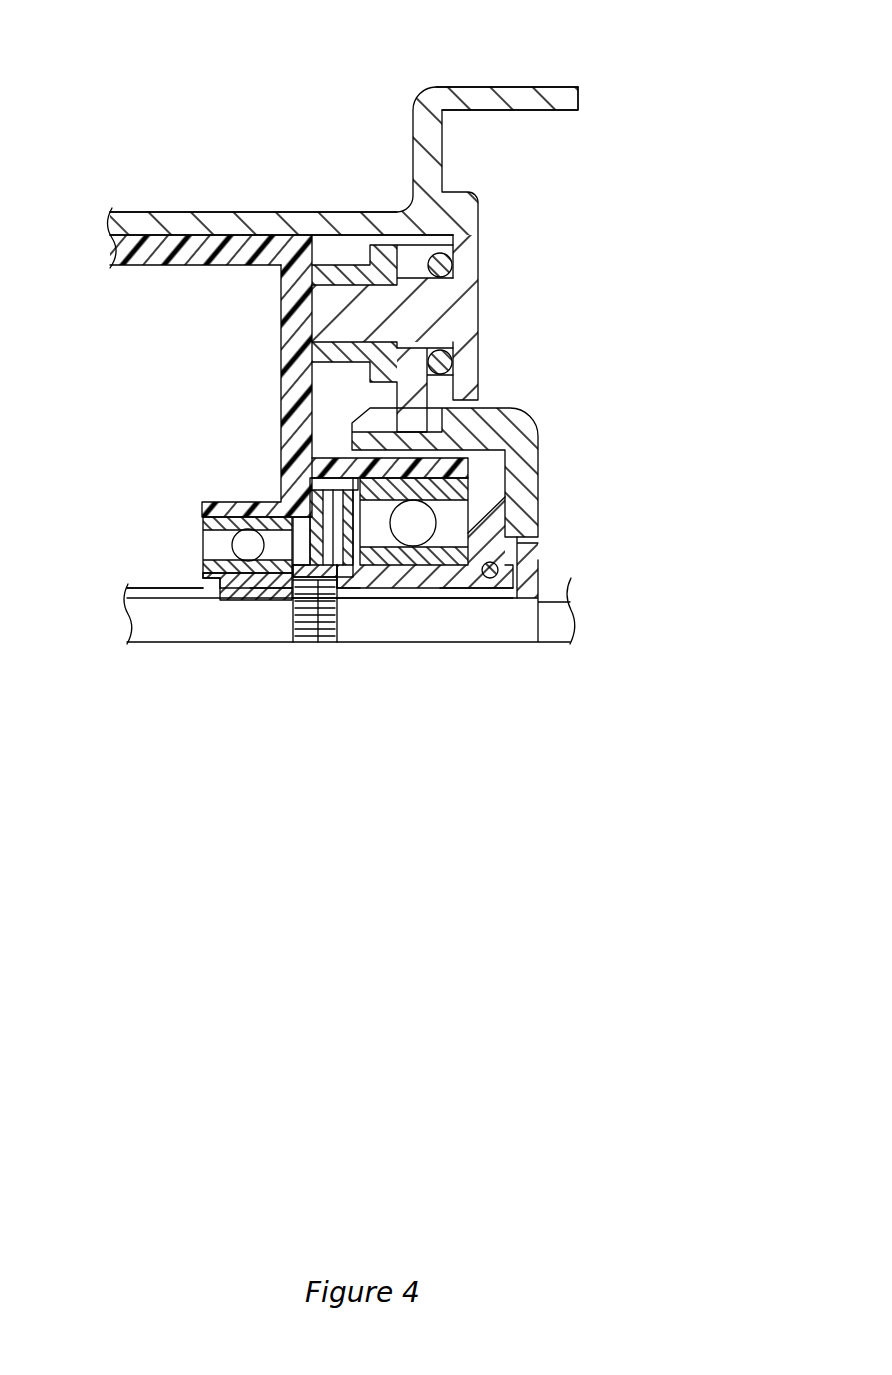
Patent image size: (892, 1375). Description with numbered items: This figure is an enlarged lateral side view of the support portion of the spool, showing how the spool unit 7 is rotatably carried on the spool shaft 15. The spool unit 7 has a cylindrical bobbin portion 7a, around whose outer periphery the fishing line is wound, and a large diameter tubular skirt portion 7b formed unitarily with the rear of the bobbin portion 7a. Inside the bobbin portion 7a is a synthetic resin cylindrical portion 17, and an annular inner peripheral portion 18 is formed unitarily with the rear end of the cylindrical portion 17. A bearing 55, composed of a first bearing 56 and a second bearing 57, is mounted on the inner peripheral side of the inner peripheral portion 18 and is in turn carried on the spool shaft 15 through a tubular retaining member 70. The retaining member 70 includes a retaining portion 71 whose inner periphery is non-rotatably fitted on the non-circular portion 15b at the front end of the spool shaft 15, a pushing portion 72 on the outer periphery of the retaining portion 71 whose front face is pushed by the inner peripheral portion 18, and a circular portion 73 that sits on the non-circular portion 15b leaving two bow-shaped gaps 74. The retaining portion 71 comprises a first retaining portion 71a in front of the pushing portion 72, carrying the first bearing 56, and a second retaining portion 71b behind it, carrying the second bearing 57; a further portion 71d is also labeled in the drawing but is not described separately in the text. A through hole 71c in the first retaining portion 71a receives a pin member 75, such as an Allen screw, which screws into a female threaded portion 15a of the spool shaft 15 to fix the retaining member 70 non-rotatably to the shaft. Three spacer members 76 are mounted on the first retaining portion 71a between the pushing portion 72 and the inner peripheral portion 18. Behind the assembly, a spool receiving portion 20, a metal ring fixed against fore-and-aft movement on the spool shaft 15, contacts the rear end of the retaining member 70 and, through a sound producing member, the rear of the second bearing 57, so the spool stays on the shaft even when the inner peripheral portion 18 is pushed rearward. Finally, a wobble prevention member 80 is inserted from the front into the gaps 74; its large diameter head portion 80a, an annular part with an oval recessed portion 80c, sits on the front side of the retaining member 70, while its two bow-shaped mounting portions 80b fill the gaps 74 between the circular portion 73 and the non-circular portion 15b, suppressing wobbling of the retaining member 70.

The spool unit 7 is at (220, 142).
The bobbin portion 7a is at (302, 225).
The skirt portion 7b is at (515, 87).
The cylindrical portion 17 is at (176, 252).
The inner peripheral portion 18 is at (283, 350).
The bearing 55 is at (205, 473).
The first bearing 56 is at (243, 540).
The second bearing 57 is at (318, 498).
The pushing portion 72 is at (347, 500).
The spacer members 76 is at (330, 555).
The pin member 75 is at (316, 620).
The retaining portion 71 is at (392, 582).
The first retaining portion 71a is at (250, 600).
The second retaining portion 71b is at (467, 582).
The through hole 71c is at (330, 598).
The housing recess 71d is at (495, 590).
The retaining member 70 is at (433, 590).
The spool receiving portion 20 is at (532, 570).
The spool shaft 15 is at (552, 632).
The female threaded portion 15a is at (305, 600).
The non-circular portion 15b is at (205, 600).
The wobble prevention member 80 is at (195, 583).
The head portion 80a is at (193, 563).
The mounting portions 80b is at (262, 590).
The recessed portion 80c is at (212, 583).
The circular portion 73 is at (232, 596).
The gaps 74 is at (185, 595).